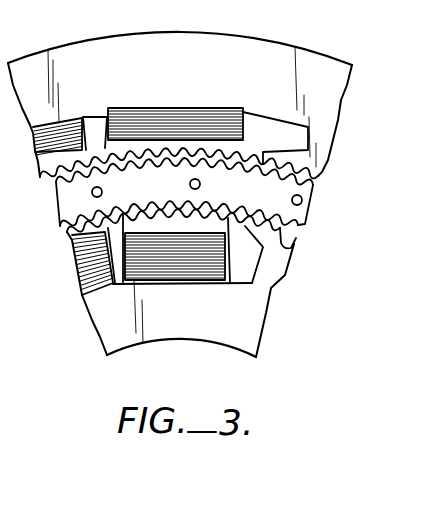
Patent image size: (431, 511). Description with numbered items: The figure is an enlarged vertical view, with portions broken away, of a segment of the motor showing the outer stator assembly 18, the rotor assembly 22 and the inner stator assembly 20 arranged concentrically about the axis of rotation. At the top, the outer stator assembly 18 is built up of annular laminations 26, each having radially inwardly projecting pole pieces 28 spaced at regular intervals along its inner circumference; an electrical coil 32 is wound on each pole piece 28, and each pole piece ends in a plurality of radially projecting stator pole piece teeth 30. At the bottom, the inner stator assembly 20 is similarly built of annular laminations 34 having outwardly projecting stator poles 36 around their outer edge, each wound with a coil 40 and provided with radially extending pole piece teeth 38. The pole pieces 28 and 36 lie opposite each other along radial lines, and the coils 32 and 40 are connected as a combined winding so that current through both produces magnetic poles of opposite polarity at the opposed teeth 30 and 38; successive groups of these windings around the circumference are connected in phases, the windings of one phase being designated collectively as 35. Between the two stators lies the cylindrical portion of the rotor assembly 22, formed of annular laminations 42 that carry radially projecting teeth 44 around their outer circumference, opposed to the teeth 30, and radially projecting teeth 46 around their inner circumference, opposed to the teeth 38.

The outer stator assembly 18 is at (272, 34).
The inner stator assembly 20 is at (188, 355).
The rotor assembly 22 is at (58, 218).
The annular laminations 26 is at (334, 78).
The pole pieces 28 is at (319, 140).
The stator pole piece teeth 30 is at (300, 170).
The electrical coil 32 is at (143, 118).
The annular laminations 34 is at (248, 330).
The windings of a given phase 35 is at (184, 100).
The stator poles 36 is at (278, 277).
The pole piece teeth 38 is at (296, 251).
The coil 40 is at (157, 272).
The annular laminations 42 is at (67, 190).
The radially projecting teeth 44 is at (311, 193).
The radially projecting teeth 46 is at (299, 222).